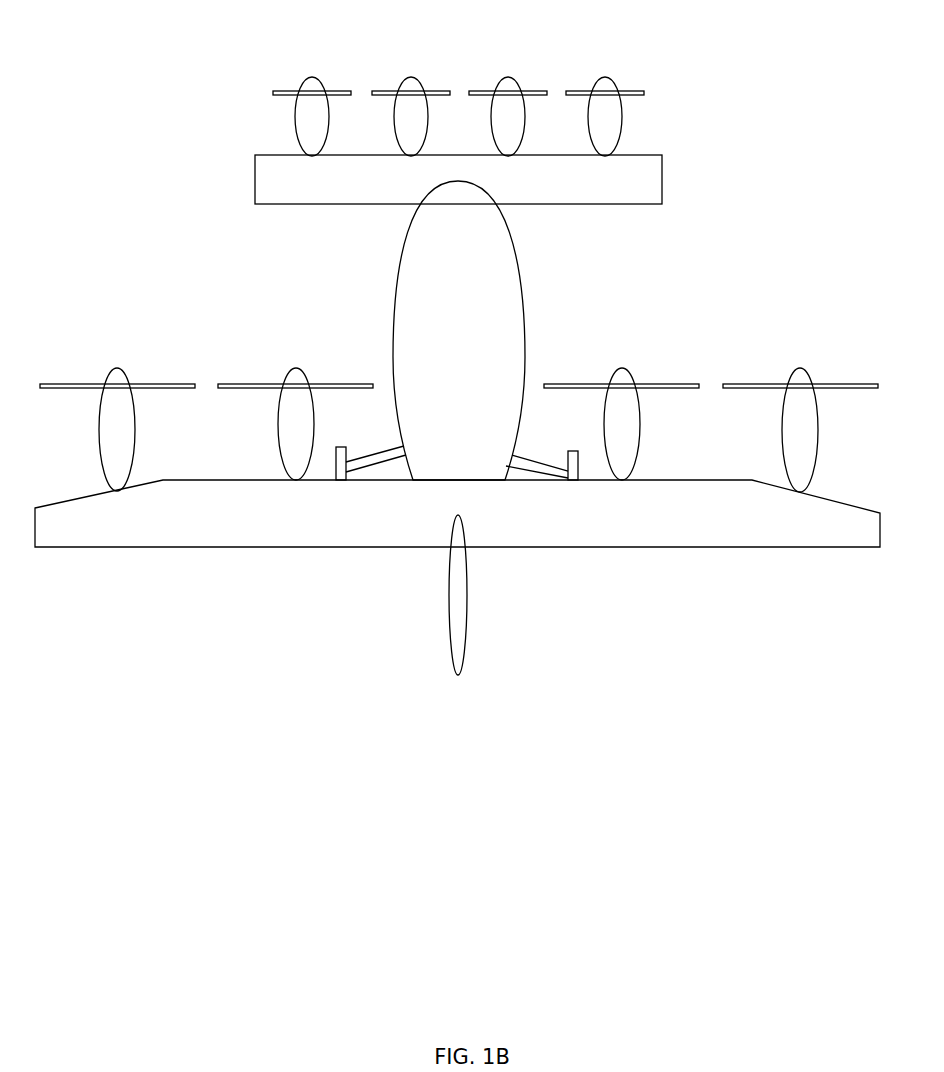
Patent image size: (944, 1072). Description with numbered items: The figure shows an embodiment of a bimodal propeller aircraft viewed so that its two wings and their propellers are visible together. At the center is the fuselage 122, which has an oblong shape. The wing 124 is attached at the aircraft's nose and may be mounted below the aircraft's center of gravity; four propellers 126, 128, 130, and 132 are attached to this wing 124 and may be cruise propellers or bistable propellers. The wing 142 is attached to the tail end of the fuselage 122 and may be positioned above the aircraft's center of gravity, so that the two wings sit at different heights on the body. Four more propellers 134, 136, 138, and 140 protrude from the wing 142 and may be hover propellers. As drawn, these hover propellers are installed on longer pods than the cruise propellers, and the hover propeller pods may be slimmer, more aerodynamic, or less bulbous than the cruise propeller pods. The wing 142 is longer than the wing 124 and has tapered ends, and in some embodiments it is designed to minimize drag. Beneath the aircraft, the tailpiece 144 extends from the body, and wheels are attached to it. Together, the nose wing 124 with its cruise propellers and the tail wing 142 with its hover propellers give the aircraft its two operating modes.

The fuselage 122 is at (398, 295).
The wing 124 is at (255, 183).
The propeller 126 is at (314, 78).
The propeller 128 is at (413, 78).
The propeller 130 is at (510, 78).
The propeller 132 is at (607, 78).
The propeller 134 is at (120, 369).
The propeller 136 is at (299, 369).
The propeller 138 is at (625, 369).
The propeller 140 is at (803, 369).
The wing 142 is at (673, 547).
The tailpiece 144 is at (450, 628).